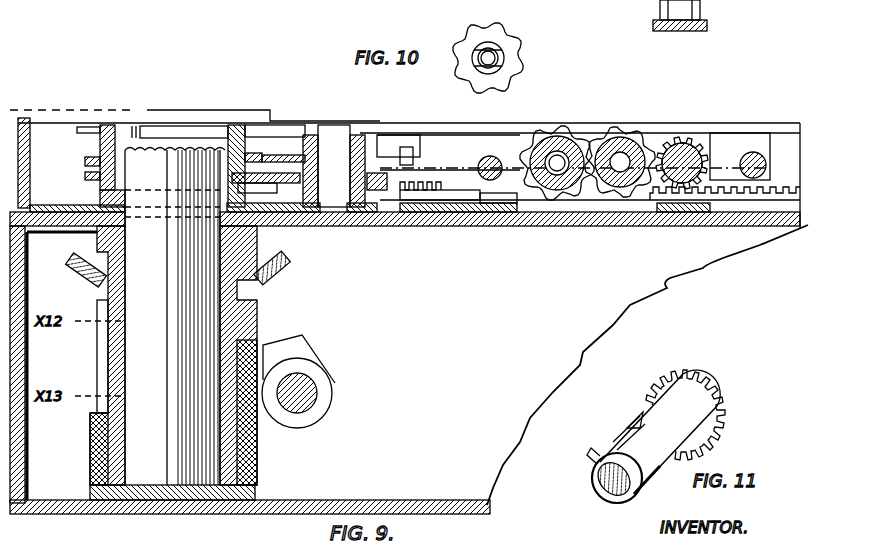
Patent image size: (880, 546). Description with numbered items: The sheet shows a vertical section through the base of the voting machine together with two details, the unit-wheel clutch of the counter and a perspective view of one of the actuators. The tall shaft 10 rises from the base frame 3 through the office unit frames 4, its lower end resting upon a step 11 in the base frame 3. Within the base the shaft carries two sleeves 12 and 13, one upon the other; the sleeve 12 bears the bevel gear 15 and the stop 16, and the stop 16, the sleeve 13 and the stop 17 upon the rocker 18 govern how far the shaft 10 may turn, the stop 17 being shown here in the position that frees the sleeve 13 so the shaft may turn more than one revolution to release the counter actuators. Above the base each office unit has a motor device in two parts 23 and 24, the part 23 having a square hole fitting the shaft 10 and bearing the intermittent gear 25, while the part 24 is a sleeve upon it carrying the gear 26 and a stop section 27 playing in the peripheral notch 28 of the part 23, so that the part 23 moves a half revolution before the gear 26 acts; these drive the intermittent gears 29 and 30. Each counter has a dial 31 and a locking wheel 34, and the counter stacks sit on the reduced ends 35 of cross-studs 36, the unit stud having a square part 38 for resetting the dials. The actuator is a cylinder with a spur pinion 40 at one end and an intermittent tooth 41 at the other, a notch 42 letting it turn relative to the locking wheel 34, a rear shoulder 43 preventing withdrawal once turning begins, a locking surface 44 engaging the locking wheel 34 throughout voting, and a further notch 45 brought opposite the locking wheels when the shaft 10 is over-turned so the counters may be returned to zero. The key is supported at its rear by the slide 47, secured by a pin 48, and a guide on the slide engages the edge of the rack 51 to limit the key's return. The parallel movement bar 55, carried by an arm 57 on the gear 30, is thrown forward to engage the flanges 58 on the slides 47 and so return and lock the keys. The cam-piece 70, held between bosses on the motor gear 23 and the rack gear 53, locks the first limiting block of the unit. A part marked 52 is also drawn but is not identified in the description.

In FIG. 9, the base frame 3 is at (600, 226).
In FIG. 9, the unit frames 4 is at (662, 226).
In FIG. 9, the shaft 10 is at (175, 317).
In FIG. 9, the step 11 is at (172, 494).
In FIG. 9, the sleeve 12 is at (254, 325).
In FIG. 9, the sleeve 13 is at (257, 435).
In FIG. 9, the bevel gear 15 is at (285, 262).
In FIG. 9, the stop 16 is at (260, 325).
In FIG. 9, the stop 17 is at (305, 352).
In FIG. 9, the rocker 18 is at (335, 395).
In FIG. 9, the motor device part 23 is at (100, 197).
In FIG. 9, the motor device part 24 is at (100, 147).
In FIG. 9, the intermittent gear 25 is at (85, 177).
In FIG. 9, the gear 26 is at (85, 162).
In FIG. 9, the stop section 27 is at (236, 127).
In FIG. 9, the peripheral notch 28 is at (158, 135).
In FIG. 9, the intermittent gear 29 is at (275, 183).
In FIG. 9, the intermittent gear 30 is at (263, 160).
In FIG. 9, the dial 31 is at (334, 166).
In FIG. 9, the locking wheel 34 is at (557, 135).
In FIG. 10, the locking wheel 34 is at (525, 50).
In FIG. 10, the reduced ends 35 is at (500, 62).
In FIG. 9, the cross-studs 36 is at (640, 140).
In FIG. 10, the square part 38 is at (492, 52).
In FIG. 9, the spur pinion 40 is at (688, 142).
In FIG. 11, the spur pinion 40 is at (686, 384).
In FIG. 11, the intermittent tooth 41 is at (597, 446).
In FIG. 11, the notch or mutilation 42 is at (613, 442).
In FIG. 11, the rear shoulder 43 is at (630, 418).
In FIG. 9, the locking surface 44 is at (705, 160).
In FIG. 11, the locking surface 44 is at (670, 472).
In FIG. 11, the notch or mutilation 45 is at (710, 445).
In FIG. 9, the slide 47 is at (741, 163).
In FIG. 9, the pin 48 is at (195, 107).
In FIG. 9, the rack 51 is at (720, 210).
In FIG. 9, the slide 52 is at (480, 215).
In FIG. 9, the rack gear 53 is at (440, 215).
In FIG. 9, the parallel movement bar 55 is at (482, 140).
In FIG. 9, the arm 57 is at (448, 152).
In FIG. 9, the lugs or flanges 58 is at (755, 133).
In FIG. 9, the cam-piece 70 is at (305, 215).